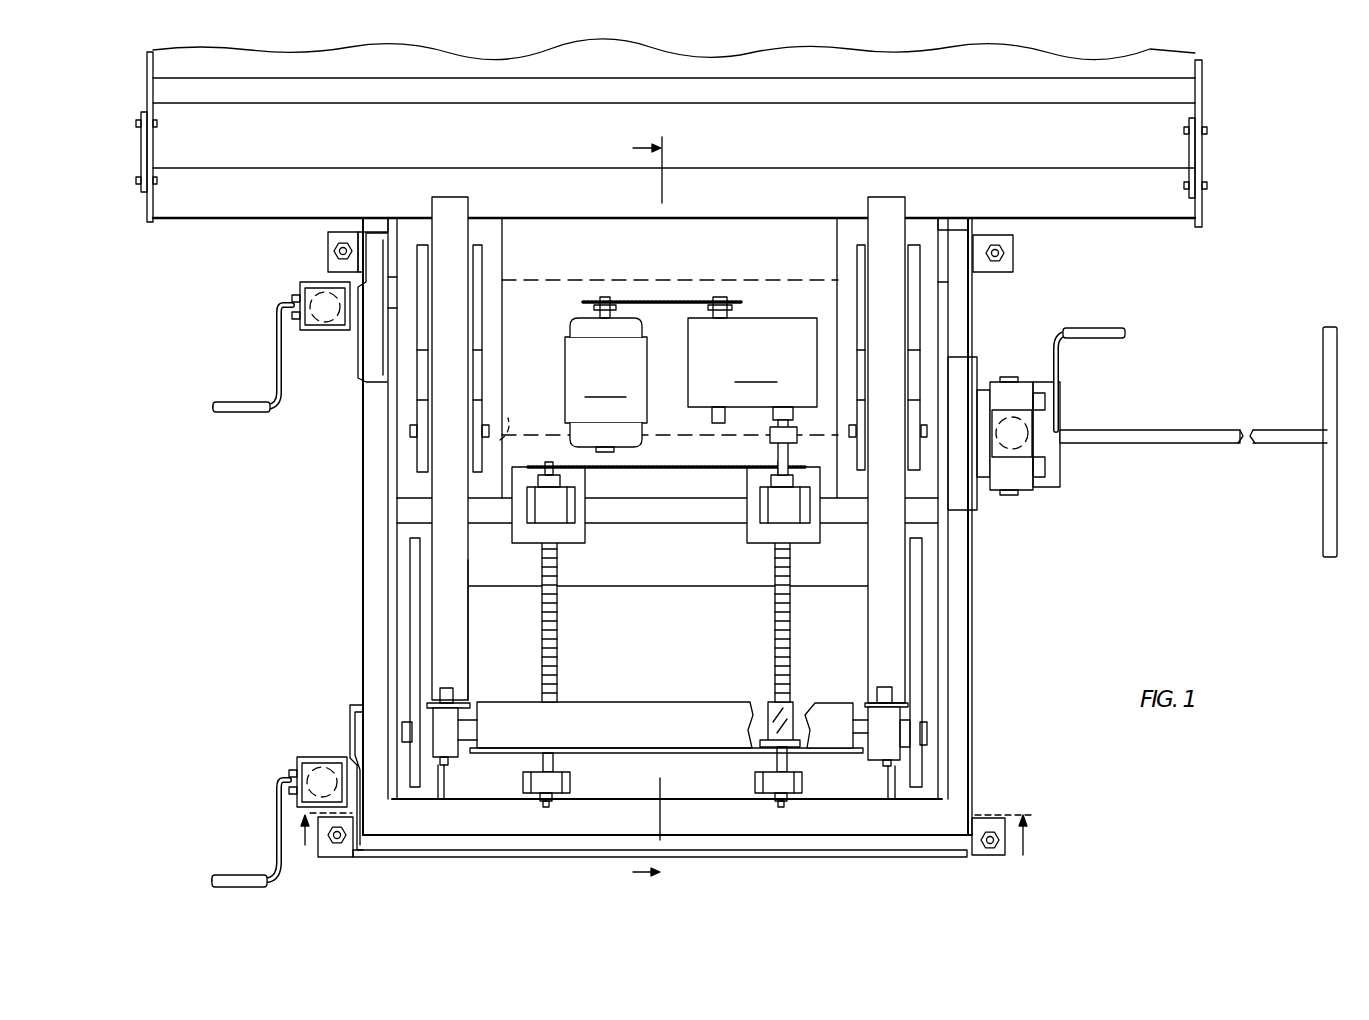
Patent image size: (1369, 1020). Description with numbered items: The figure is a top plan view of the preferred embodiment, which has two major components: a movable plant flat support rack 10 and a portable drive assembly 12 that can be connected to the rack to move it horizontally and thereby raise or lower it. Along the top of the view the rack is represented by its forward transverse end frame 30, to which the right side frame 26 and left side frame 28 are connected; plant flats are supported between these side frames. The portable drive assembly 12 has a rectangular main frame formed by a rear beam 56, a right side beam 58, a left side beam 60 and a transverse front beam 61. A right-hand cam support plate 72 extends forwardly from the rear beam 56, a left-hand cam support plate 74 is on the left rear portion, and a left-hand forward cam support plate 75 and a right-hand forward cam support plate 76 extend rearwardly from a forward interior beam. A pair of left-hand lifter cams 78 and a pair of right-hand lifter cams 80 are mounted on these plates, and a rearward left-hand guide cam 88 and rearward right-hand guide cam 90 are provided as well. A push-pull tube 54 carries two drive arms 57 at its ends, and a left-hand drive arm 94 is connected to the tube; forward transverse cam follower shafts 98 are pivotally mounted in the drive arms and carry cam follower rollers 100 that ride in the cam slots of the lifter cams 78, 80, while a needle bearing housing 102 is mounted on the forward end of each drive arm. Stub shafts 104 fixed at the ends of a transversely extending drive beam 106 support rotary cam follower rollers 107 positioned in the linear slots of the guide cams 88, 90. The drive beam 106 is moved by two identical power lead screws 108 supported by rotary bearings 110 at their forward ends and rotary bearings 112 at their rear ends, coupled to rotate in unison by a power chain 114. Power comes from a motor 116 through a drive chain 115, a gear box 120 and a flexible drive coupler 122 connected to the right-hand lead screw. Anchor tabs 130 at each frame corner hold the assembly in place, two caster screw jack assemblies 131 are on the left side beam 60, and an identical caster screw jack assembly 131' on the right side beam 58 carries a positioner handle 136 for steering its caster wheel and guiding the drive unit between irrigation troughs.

The movable plant flat support rack 10 is at (718, 464).
The portable drive assembly 12 is at (980, 665).
The right side frame 26 is at (1200, 95).
The left side frame 28 is at (147, 66).
The forward transverse end frame 30 is at (777, 92).
The push-pull tube 54 is at (498, 185).
The rear beam 56 is at (570, 275).
The drive arm 57 is at (141, 163).
The right side beam 58 is at (960, 762).
The left side beam 60 is at (375, 657).
The transverse front beam 61 is at (392, 228).
The right-hand cam support plate 72 is at (928, 330).
The left-hand cam support plate 74 is at (405, 487).
The left-hand forward cam support plate 75 is at (400, 600).
The right-hand forward cam support plate 76 is at (930, 630).
The left-hand lifter cam 78 is at (483, 262).
The right-hand lifter cam 80 is at (895, 308).
The rearward left-hand guide cam 88 is at (418, 666).
The rearward right-hand guide cam 90 is at (915, 557).
The left-hand drive arm 94 is at (466, 630).
The forward transverse cam follower shaft 98 is at (410, 431).
The cam follower roller 100 is at (492, 430).
The needle bearing housing 102 is at (450, 737).
The stub shaft 104 is at (862, 742).
The drive beam 106 is at (680, 712).
The rotary cam follower roller 107 is at (973, 733).
The power lead screw 108 is at (557, 615).
The rotary bearing 110 is at (553, 775).
The rotary bearing 112 is at (553, 503).
The power chain 114 is at (652, 469).
The drive chain 115 is at (657, 298).
The motor 116 is at (606, 374).
The gear box 120 is at (752, 360).
The flexible drive coupler 122 is at (776, 440).
The anchor tab 130 is at (328, 260).
The caster screw jack assembly 131 is at (299, 560).
The caster screw jack assembly 131' is at (1042, 453).
The positioner handle 136 is at (1118, 408).